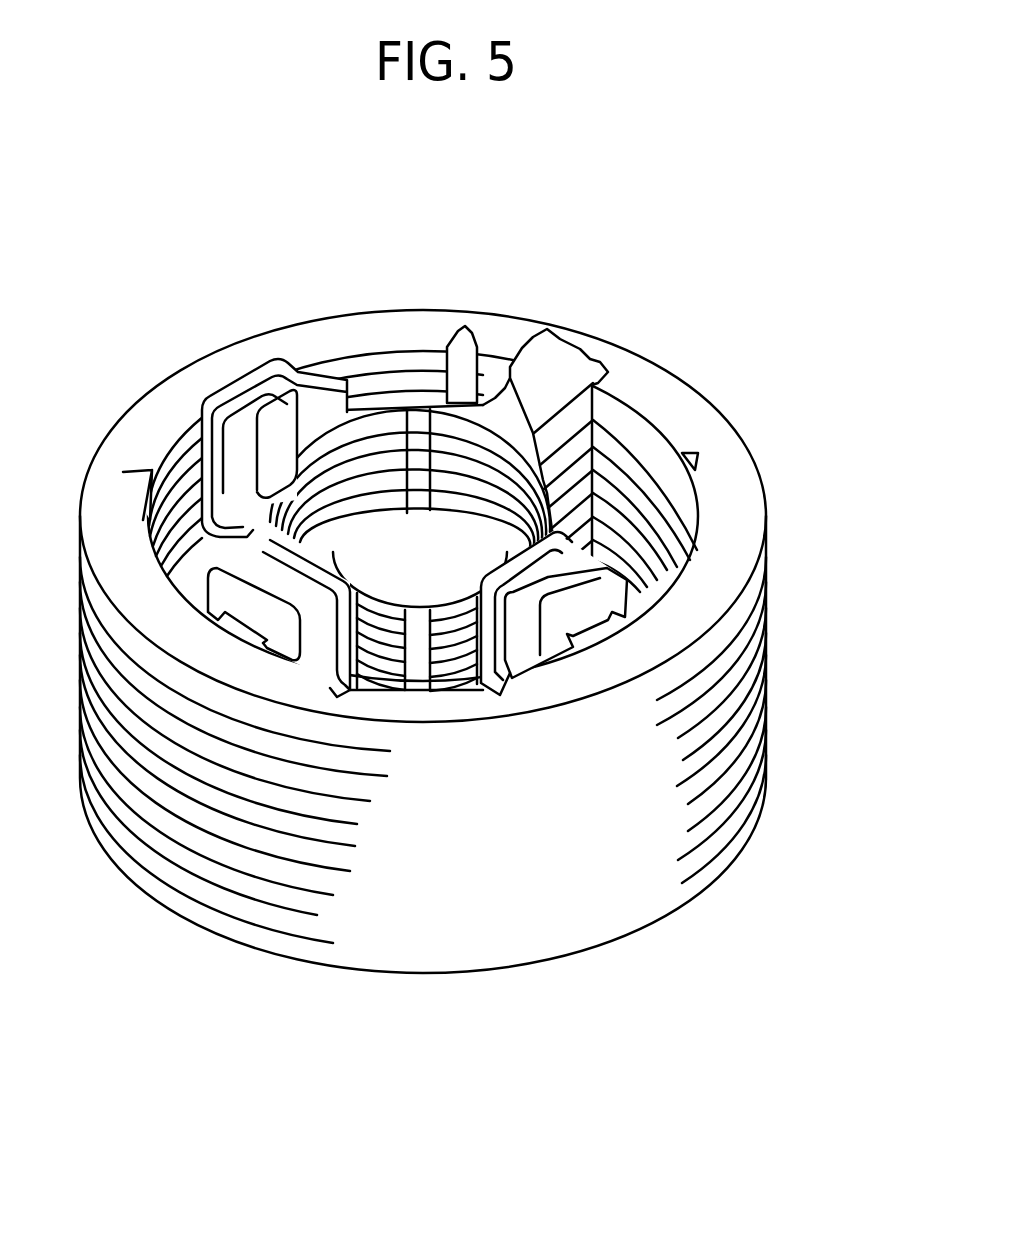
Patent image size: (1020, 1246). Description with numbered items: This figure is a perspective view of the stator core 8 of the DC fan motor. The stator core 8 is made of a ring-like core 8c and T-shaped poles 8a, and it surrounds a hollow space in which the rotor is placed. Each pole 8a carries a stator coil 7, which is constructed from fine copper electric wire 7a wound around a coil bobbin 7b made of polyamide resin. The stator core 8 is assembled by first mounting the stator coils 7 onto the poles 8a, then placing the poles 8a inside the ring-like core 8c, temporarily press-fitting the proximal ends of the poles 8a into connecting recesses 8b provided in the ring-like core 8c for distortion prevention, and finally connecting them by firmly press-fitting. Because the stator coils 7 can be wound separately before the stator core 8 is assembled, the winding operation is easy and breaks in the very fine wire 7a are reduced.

The stator coil 7 is at (698, 798).
The electric wire 7a is at (520, 657).
The coil bobbin 7b is at (632, 607).
The stator core 8 is at (302, 897).
The T-shaped pole 8a is at (557, 347).
The connecting recess 8b is at (607, 370).
The ring-like core 8c is at (391, 332).